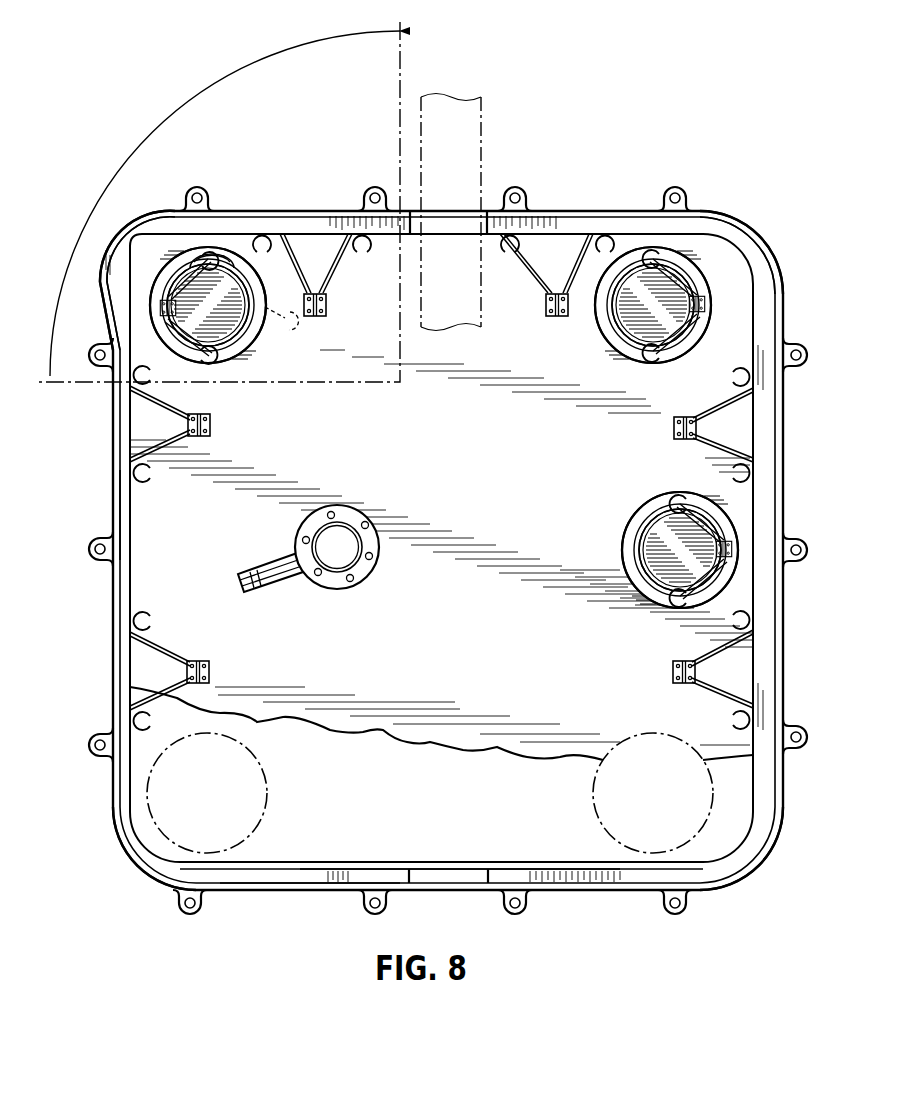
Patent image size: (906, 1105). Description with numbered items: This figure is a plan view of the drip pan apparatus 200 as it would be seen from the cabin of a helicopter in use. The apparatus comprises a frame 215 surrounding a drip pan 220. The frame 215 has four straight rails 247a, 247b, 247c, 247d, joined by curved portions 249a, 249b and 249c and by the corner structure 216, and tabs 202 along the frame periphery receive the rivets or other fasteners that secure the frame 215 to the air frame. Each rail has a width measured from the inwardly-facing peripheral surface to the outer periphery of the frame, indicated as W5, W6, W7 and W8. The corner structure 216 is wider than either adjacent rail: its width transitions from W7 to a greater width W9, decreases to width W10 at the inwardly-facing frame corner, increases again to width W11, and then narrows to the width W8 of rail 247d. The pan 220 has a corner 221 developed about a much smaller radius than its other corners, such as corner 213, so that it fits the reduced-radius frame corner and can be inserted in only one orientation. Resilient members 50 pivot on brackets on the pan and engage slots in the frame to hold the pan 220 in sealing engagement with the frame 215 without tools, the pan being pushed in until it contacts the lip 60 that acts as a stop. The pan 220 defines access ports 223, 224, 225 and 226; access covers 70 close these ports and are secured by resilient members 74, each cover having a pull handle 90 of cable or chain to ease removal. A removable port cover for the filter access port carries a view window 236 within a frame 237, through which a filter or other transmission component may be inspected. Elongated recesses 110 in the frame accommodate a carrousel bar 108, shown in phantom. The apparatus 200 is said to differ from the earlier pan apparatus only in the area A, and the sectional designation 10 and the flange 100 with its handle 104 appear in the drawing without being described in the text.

The drip pan apparatus 200 is at (721, 126).
The carrousel bar 108 is at (482, 141).
The elongated recess 110 is at (465, 226).
The corner structure 216 is at (120, 221).
The corner 221 is at (137, 232).
The frame 237 is at (214, 262).
The resilient member 74 is at (213, 268).
The pull handle 90 is at (232, 300).
The view window 236 is at (246, 318).
The section line 10 is at (48, 379).
The rail 247c is at (556, 218).
The tab 202 is at (676, 186).
The corner 213 is at (740, 247).
The curved portion 249b is at (763, 263).
The access cover 70 is at (596, 338).
The access port 226 is at (642, 360).
The resilient member 50 is at (216, 425).
The drip pan 220 is at (128, 425).
The frame 215 is at (113, 520).
The flange 100 is at (362, 507).
The handle 104 is at (258, 579).
The rail 247b is at (738, 508).
The access port 225 is at (662, 601).
The rail 247d is at (128, 623).
The access port 223 is at (207, 745).
The access port 224 is at (655, 745).
The curved portion 249c is at (142, 851).
The rail 247a is at (280, 891).
The lip 60 is at (405, 862).
The curved portion 249a is at (745, 867).
The area A is at (187, 105).
The width W5 is at (540, 845).
The width W6 is at (797, 672).
The width W7 is at (445, 185).
The width W8 is at (88, 590).
The width W9 is at (165, 210).
The width W10 is at (165, 236).
The width W11 is at (165, 287).